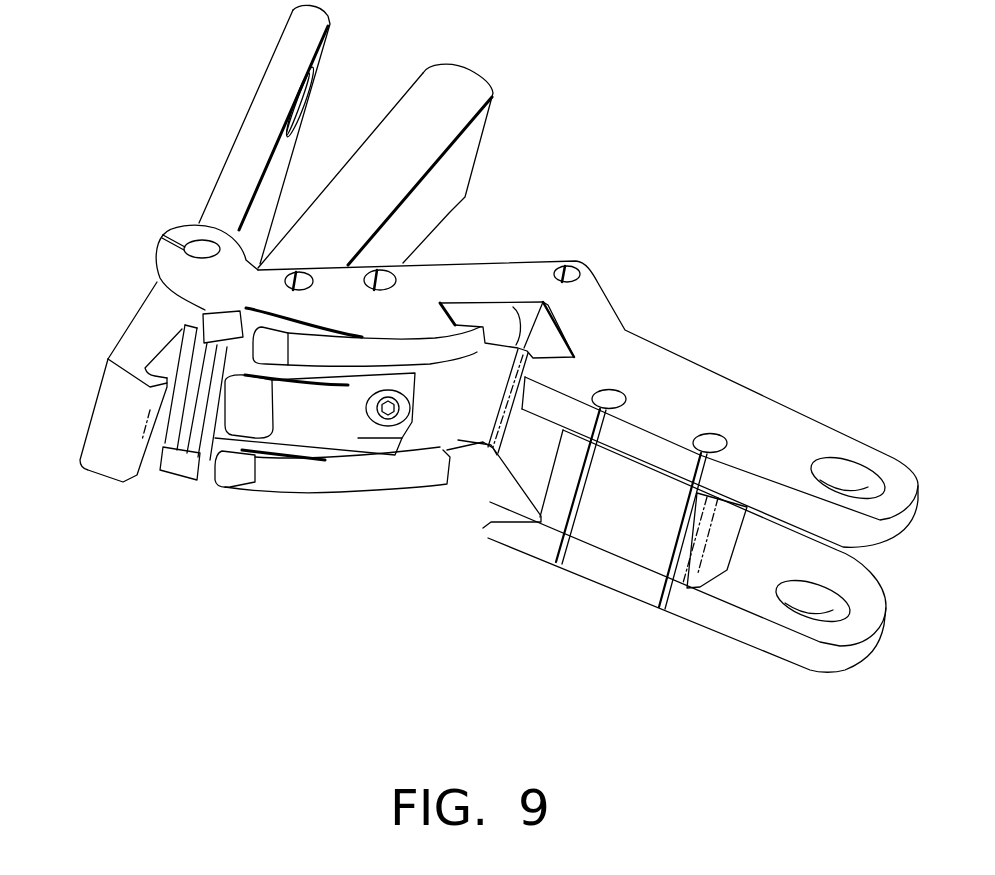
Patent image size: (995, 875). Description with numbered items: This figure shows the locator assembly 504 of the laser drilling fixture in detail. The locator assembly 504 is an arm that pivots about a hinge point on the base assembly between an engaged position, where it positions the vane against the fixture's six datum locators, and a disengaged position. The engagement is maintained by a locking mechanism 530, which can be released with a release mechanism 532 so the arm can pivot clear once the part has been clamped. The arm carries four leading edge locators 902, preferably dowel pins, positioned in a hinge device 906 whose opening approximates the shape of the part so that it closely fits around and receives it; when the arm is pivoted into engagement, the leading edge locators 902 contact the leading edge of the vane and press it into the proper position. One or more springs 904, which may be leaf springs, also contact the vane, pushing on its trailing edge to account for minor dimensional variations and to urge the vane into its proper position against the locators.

The locator assembly 504 is at (197, 610).
The locking mechanism 530 is at (123, 447).
The release mechanism 532 is at (247, 118).
The leading edge locators 902 is at (497, 320).
The springs 904 is at (295, 352).
The hinge device 906 is at (593, 330).